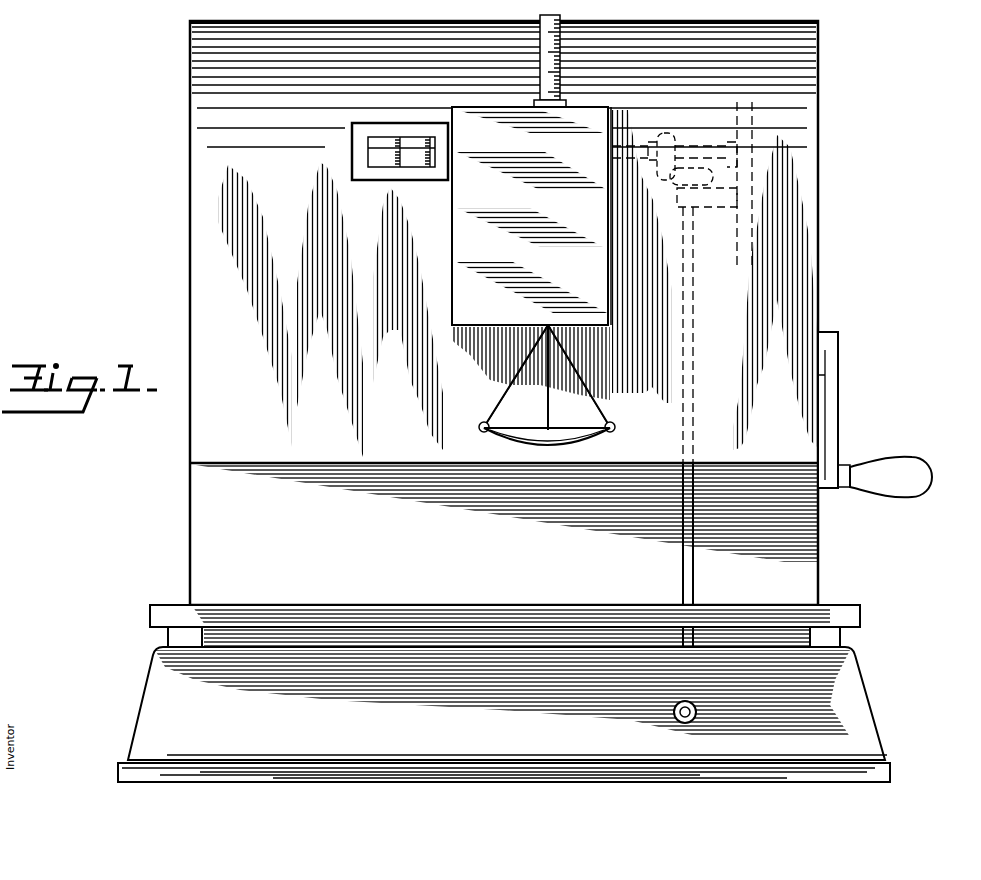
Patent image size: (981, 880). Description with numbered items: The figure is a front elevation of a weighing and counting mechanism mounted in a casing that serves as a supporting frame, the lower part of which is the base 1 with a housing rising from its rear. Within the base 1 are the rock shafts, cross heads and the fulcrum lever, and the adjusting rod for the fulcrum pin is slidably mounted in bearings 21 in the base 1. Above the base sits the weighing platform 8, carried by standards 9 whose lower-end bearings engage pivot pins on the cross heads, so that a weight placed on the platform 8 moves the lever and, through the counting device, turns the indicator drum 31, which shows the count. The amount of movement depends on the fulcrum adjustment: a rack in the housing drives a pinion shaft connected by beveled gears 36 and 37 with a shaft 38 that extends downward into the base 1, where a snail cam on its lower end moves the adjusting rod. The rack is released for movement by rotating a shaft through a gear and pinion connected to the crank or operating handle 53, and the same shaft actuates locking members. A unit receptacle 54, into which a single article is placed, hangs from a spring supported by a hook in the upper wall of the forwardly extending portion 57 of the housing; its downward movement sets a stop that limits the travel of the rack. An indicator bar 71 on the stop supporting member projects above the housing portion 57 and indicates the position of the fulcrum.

The base 1 is at (504, 714).
The weighing platform 8 is at (510, 600).
The standards 9 is at (183, 636).
The bearings 21 is at (673, 707).
The indicator drum 31 is at (379, 163).
The beveled gear 36 is at (672, 131).
The beveled gear 37 is at (677, 184).
The shaft 38 is at (694, 297).
The operating handle 53 is at (833, 425).
The unit receptacle 54 is at (585, 437).
The forwardly extending portion of the housing 57 is at (531, 216).
The indicator bar 71 is at (562, 77).